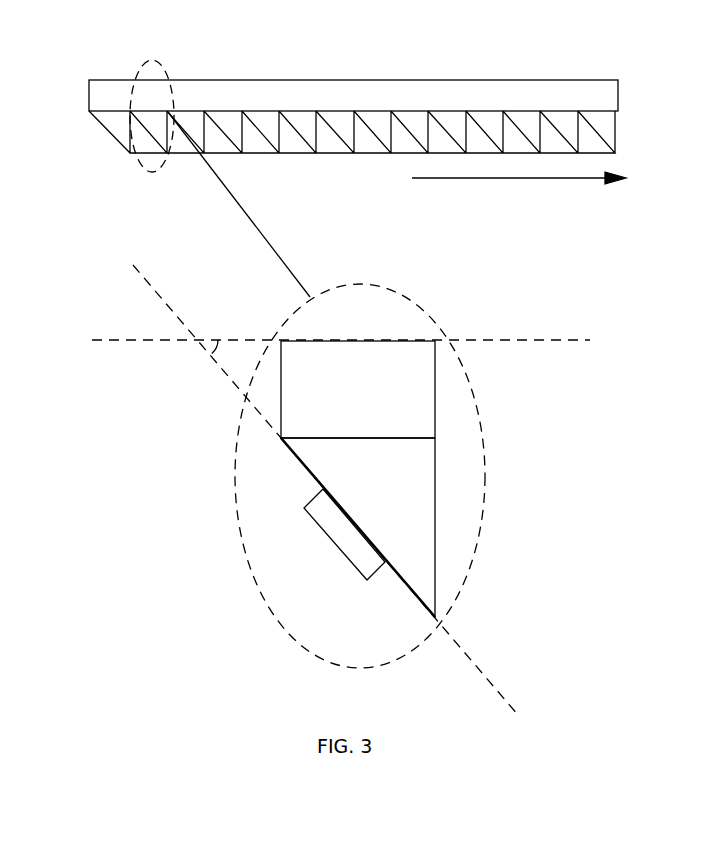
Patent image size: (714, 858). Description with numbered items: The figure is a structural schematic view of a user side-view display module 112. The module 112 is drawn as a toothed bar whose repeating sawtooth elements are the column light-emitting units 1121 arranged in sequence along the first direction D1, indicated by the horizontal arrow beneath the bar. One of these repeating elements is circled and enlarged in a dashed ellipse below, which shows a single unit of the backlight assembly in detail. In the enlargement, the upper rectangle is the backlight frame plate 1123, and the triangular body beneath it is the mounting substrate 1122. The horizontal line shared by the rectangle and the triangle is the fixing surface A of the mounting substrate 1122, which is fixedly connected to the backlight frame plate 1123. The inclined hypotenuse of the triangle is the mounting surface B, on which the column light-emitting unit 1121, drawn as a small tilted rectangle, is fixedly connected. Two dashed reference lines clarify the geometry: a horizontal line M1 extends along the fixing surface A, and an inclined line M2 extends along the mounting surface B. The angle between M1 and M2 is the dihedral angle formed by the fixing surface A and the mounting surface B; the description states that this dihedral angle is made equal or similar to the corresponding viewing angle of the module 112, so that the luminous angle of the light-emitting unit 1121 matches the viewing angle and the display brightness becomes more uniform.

The user side-view display module 112 is at (374, 40).
The column light-emitting unit 1121 is at (337, 548).
The mounting substrate 1122 is at (382, 487).
The backlight frame plate 1123 is at (357, 384).
The fixing surface A is at (357, 440).
The mounting surface B is at (365, 537).
The horizontal reference line M1 is at (329, 344).
The inclined reference line M2 is at (314, 472).
The first direction D1 is at (519, 189).